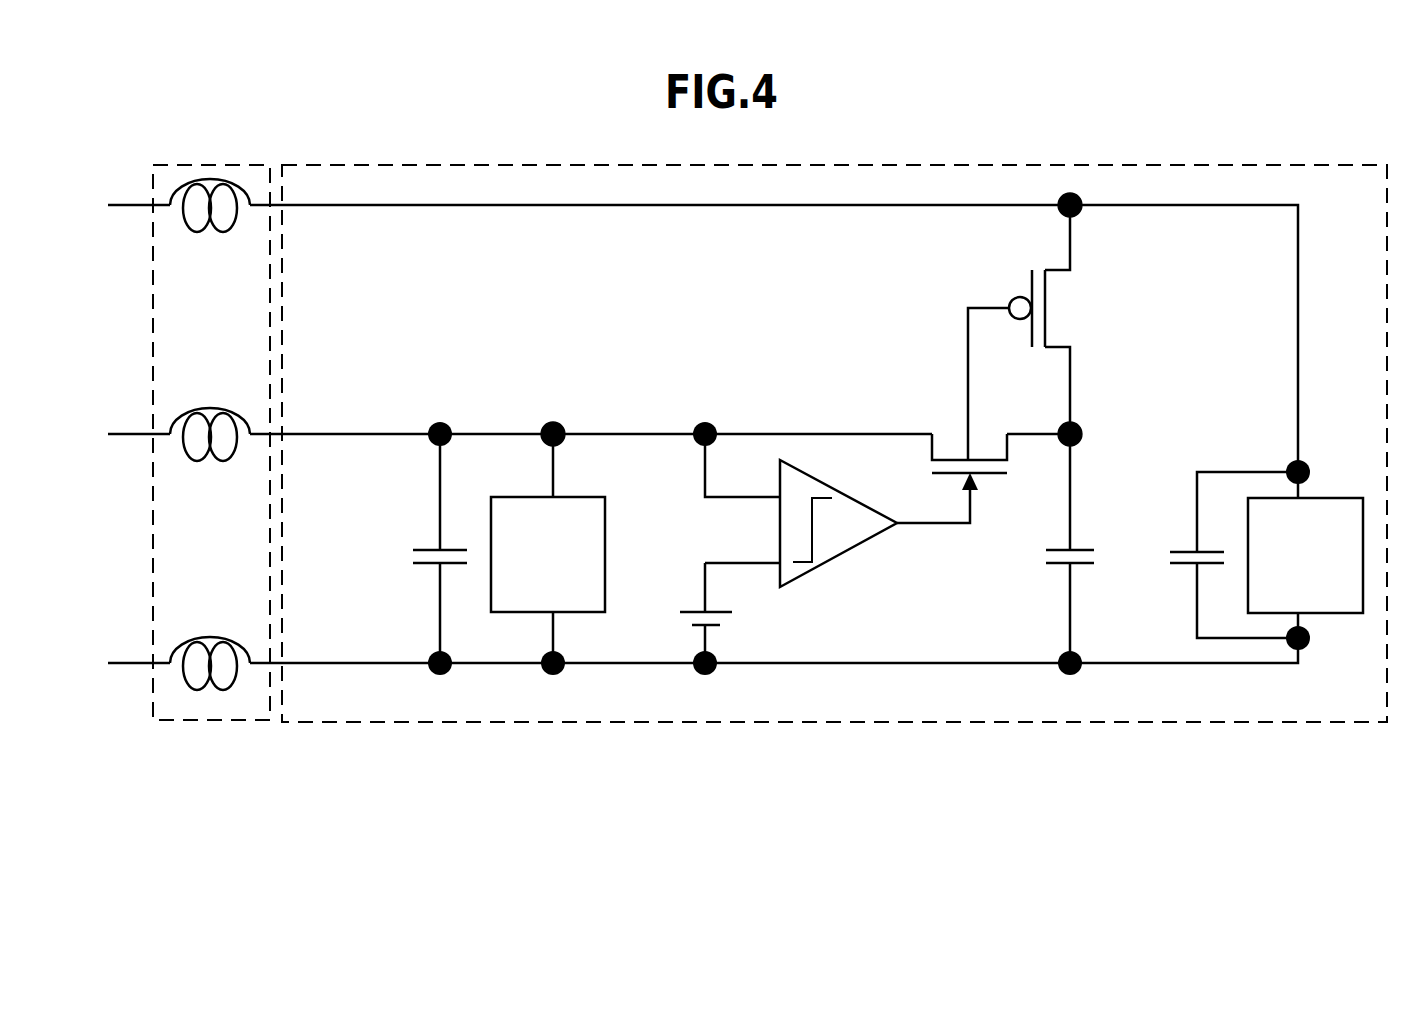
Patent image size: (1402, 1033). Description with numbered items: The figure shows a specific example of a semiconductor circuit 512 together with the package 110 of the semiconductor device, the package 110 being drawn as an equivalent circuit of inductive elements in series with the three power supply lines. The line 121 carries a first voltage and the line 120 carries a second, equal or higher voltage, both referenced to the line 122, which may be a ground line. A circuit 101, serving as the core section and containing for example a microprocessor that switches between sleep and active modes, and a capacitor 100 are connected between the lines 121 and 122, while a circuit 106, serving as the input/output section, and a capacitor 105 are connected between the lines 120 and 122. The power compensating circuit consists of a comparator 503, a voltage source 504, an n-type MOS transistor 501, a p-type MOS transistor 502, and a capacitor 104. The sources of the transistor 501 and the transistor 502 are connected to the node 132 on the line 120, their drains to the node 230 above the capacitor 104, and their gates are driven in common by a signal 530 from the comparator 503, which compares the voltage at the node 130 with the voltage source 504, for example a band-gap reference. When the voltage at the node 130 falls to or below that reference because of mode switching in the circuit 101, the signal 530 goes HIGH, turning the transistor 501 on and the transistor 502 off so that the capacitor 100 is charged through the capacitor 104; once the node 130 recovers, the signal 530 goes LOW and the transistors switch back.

The capacitor 100 is at (422, 550).
The circuit 101 is at (590, 503).
The capacitor 104 is at (1078, 552).
The capacitor 105 is at (1190, 566).
The circuit 106 is at (1262, 498).
The package 110 is at (220, 720).
The line 120 is at (147, 205).
The line 121 is at (147, 434).
The line 122 is at (147, 663).
The node 130 is at (547, 432).
The node 132 is at (1066, 200).
The node 230 is at (1080, 430).
The n-type MOS transistor 501 is at (983, 457).
The p-type MOS transistor 502 is at (1048, 325).
The comparator 503 is at (845, 565).
The voltage source 504 is at (718, 626).
The semiconductor circuit 512 is at (990, 722).
The signal 530 is at (960, 525).